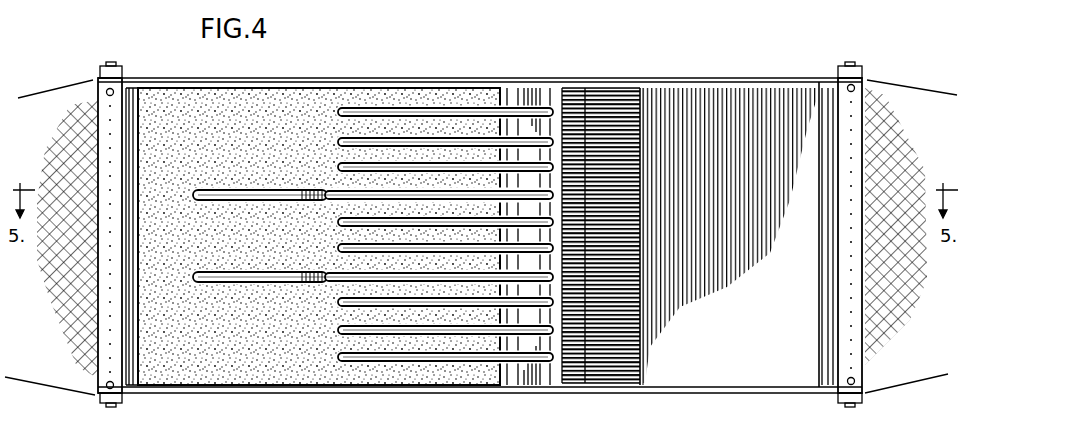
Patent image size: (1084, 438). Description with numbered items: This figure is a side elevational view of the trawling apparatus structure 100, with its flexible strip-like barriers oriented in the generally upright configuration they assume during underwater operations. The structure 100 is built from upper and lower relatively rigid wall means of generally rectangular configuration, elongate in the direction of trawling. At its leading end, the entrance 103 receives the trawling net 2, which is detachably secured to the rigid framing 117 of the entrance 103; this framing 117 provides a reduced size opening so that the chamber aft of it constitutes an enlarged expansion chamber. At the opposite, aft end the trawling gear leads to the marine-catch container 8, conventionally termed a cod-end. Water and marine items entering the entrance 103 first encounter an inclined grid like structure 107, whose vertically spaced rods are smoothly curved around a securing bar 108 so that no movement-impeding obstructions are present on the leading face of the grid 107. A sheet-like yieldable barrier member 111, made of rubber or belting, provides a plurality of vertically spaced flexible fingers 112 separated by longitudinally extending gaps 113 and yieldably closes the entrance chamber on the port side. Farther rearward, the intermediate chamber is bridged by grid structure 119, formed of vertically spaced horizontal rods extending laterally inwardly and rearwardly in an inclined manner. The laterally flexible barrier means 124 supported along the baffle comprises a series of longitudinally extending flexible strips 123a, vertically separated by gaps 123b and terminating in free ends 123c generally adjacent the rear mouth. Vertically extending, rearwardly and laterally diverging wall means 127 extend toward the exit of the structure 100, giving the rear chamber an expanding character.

The trawling net 2 is at (62, 78).
The marine-catch container 8 is at (902, 78).
The structure 100 is at (405, 57).
The entrance 103 is at (100, 400).
The framing of the entrance 117 is at (118, 76).
The yieldable barrier member 111 is at (240, 372).
The flexible fingers 112 is at (436, 372).
The longitudinally extending gaps 113 is at (357, 362).
The inclined grid like structure 107 is at (512, 360).
The securing bar 108 is at (545, 370).
The laterally flexible barrier means 124 is at (580, 80).
The flexible strips 123a is at (612, 88).
The gaps 123b is at (642, 89).
The free ends 123c is at (644, 96).
The grid structure 119 is at (649, 230).
The wall means 127 is at (722, 372).